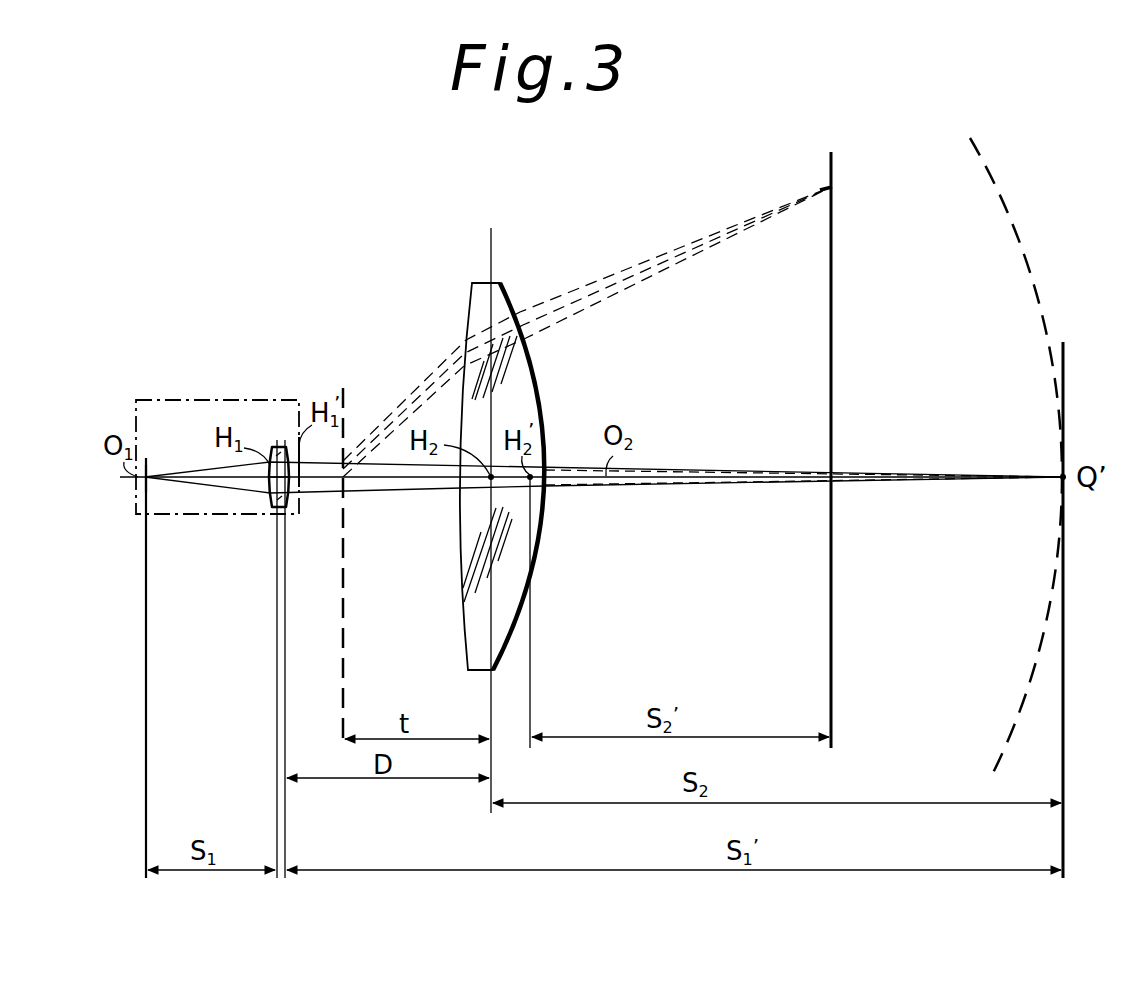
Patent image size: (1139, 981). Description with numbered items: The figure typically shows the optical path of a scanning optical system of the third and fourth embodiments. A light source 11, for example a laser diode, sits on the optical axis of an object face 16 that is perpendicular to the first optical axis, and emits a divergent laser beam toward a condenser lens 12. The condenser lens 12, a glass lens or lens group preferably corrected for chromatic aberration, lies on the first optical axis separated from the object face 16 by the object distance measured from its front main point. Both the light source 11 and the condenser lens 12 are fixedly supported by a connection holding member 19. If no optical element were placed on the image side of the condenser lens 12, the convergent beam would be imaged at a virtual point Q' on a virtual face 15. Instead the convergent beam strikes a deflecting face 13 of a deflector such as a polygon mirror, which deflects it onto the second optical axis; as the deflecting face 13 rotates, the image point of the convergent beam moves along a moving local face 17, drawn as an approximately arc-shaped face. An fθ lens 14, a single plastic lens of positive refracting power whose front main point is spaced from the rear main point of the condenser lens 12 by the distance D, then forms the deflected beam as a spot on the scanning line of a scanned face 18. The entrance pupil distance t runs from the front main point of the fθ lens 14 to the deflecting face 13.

The light source 11 is at (146, 485).
The condenser lens 12 is at (272, 505).
The deflecting face 13 is at (343, 393).
The fθ lens 14 is at (507, 288).
The virtual face 15 is at (1064, 662).
The object face 16 is at (147, 668).
The moving local face 17 is at (1011, 220).
The scanned face 18 is at (832, 228).
The connection holding member 19 is at (137, 400).